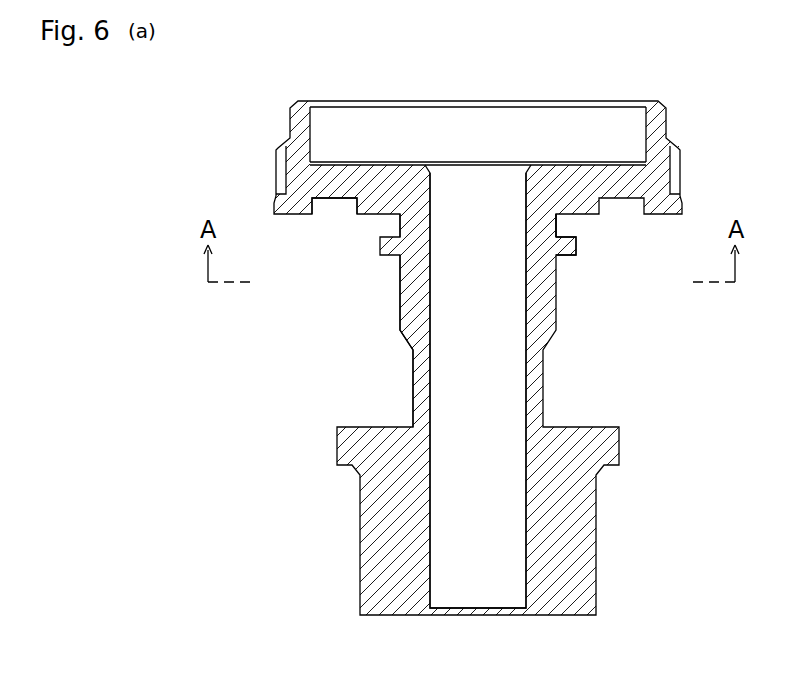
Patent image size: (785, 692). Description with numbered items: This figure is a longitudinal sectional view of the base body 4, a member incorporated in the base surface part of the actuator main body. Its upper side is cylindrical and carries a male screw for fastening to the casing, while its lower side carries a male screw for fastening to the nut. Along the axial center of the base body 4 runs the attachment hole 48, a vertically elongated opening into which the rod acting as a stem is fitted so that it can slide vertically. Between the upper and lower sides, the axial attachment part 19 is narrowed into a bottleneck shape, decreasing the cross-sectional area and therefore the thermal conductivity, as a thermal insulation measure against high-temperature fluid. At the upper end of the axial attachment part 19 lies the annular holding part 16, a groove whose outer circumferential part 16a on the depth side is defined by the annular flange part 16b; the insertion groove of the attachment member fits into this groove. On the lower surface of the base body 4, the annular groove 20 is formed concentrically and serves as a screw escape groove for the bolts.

The base body 4 is at (683, 82).
The annular groove 20 is at (343, 197).
The holding part 16 is at (400, 236).
The outer circumferential part 16a is at (560, 227).
The annular flange part 16b is at (575, 246).
The axial attachment part 19 is at (412, 302).
The attachment hole 48 is at (527, 570).